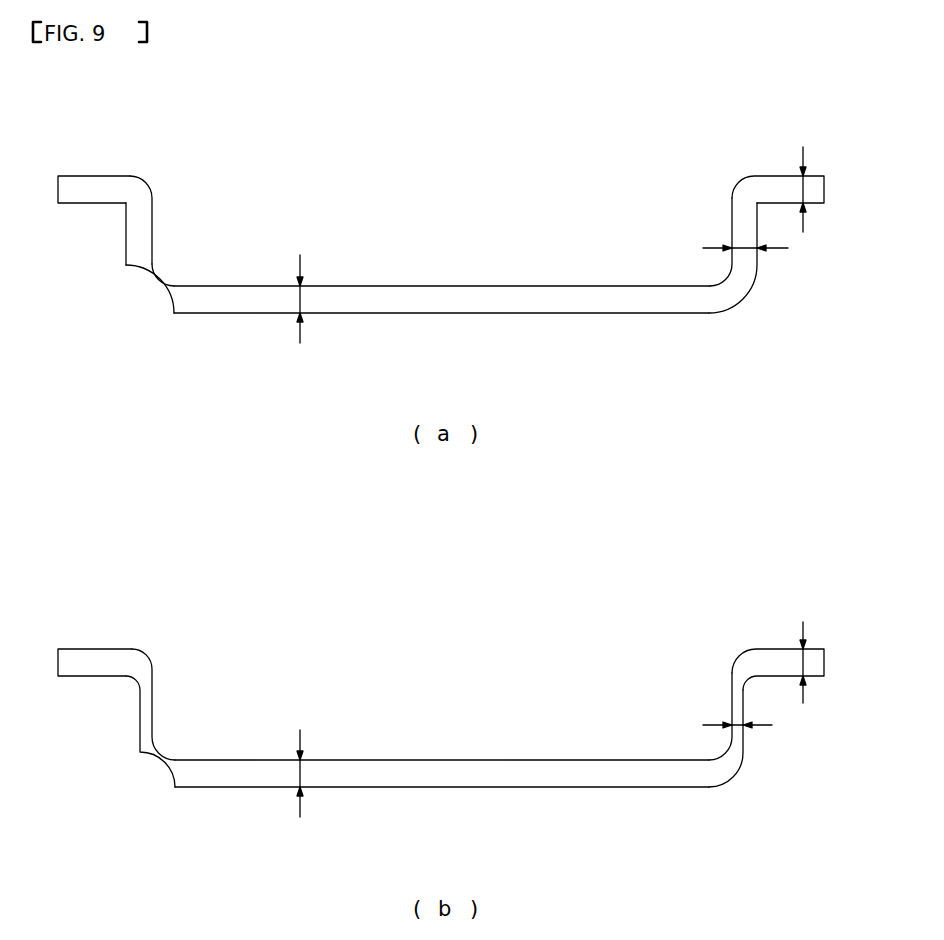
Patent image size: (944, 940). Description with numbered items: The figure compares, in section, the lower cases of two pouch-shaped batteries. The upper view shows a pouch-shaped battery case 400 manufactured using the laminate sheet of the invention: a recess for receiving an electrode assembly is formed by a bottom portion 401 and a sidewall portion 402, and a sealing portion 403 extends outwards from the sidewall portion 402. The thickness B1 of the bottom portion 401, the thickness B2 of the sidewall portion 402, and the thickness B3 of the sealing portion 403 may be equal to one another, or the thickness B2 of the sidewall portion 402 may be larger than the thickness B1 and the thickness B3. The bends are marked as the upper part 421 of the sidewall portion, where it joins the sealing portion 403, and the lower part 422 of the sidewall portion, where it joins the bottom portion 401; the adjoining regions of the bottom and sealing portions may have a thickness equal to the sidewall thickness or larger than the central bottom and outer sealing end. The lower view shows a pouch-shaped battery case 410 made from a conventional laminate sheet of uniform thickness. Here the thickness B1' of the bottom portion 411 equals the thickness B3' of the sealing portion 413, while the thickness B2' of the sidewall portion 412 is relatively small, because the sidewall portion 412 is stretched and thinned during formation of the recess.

The pouch-shaped battery case 400 is at (105, 154).
The bottom portion 401 is at (743, 345).
The sidewall portion 402 is at (836, 202).
The sealing portion 403 is at (825, 137).
The pouch-shaped battery case 410 is at (105, 627).
The bottom portion 411 is at (743, 822).
The sidewall portion 412 is at (836, 675).
The sealing portion 413 is at (825, 610).
The upper part of the sidewall portion 421 is at (161, 178).
The lower part of the sidewall portion 422 is at (124, 297).
The thickness of the bottom portion B1 is at (318, 298).
The thickness of the sidewall portion B2 is at (751, 261).
The thickness of the sealing portion B3 is at (818, 189).
The thickness of the bottom portion B1' is at (321, 772).
The thickness of the sidewall portion B2' is at (743, 738).
The thickness of the sealing portion B3' is at (821, 661).